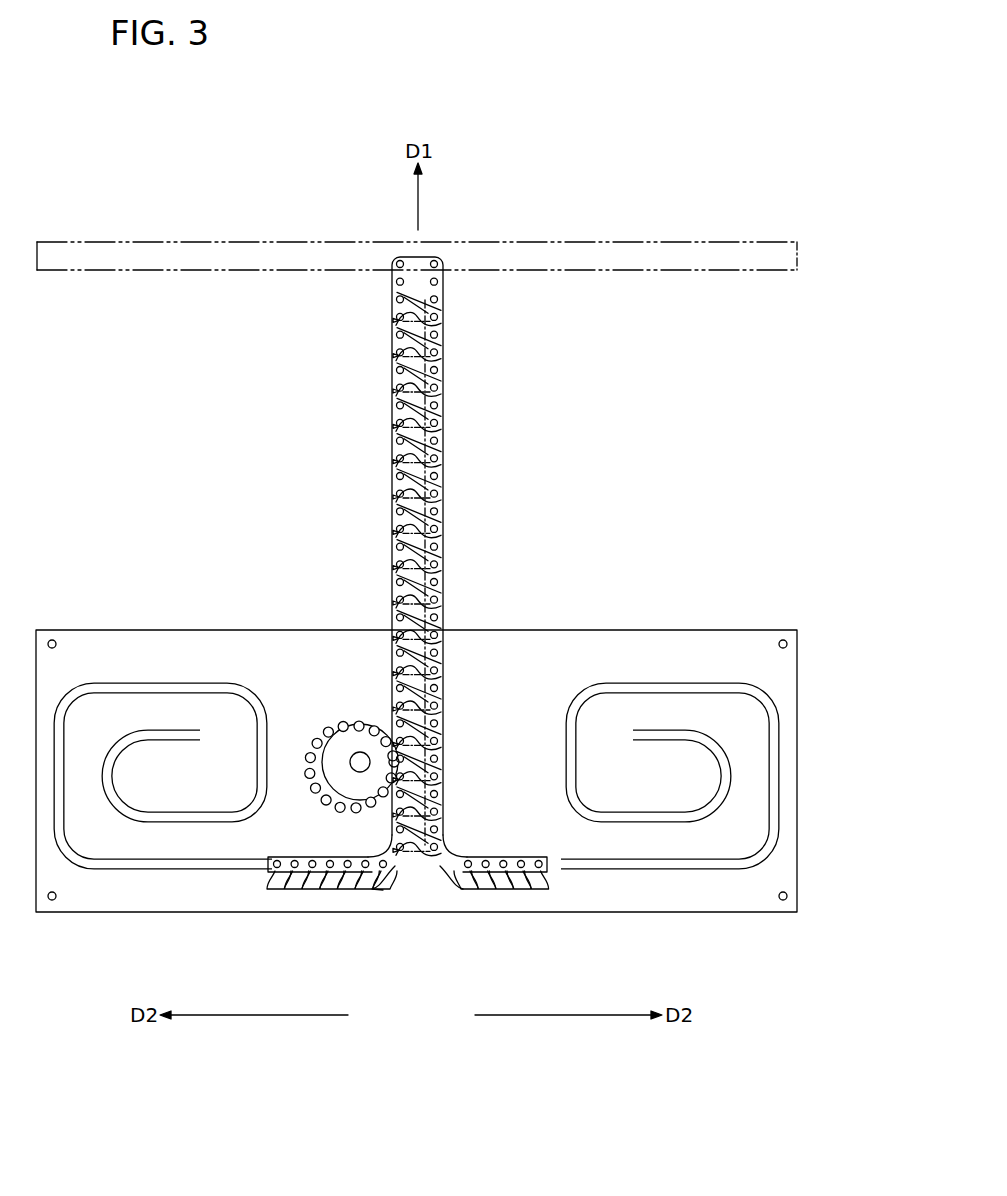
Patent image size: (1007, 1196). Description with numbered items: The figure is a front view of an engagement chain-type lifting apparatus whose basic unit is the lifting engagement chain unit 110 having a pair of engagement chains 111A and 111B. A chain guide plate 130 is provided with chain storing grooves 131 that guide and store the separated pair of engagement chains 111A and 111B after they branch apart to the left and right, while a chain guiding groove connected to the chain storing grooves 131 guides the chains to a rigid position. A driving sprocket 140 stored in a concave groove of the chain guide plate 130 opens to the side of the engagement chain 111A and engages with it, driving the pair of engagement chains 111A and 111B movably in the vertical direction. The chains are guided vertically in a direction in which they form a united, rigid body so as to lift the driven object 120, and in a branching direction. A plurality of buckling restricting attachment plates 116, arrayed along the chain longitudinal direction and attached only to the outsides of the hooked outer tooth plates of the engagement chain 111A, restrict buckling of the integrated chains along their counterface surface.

The lifting engagement chain unit 110 is at (408, 629).
The engagement chain 111A is at (331, 897).
The engagement chain 111B is at (494, 911).
The buckling restricting attachment plate 116 is at (437, 325).
The driven object 120 is at (695, 247).
The chain guide plate 130 is at (706, 645).
The chain storing groove 131 is at (184, 860).
The driving sprocket 140 is at (345, 742).